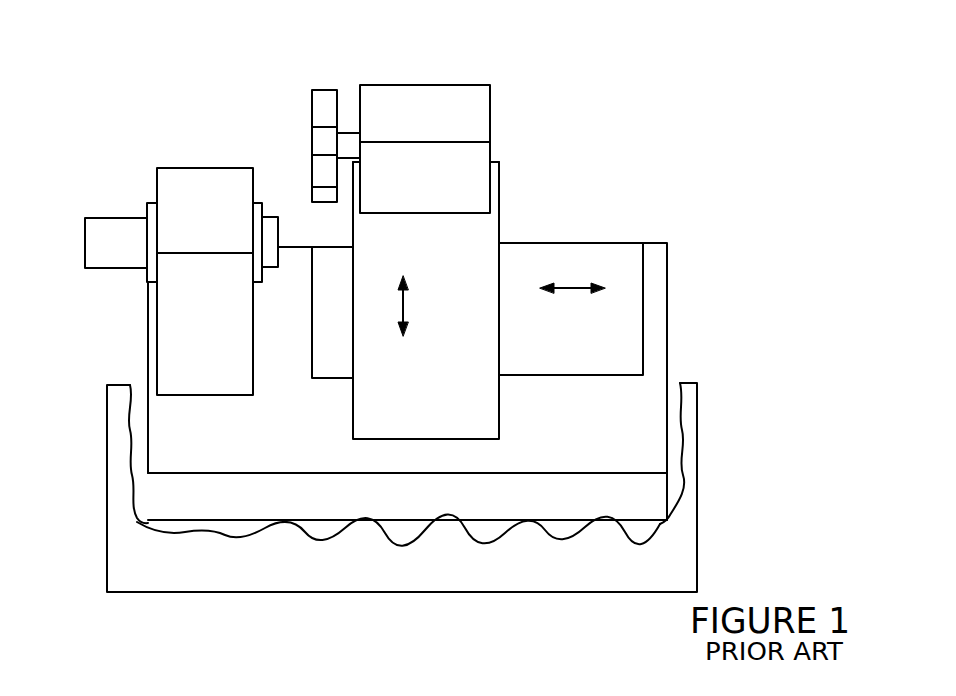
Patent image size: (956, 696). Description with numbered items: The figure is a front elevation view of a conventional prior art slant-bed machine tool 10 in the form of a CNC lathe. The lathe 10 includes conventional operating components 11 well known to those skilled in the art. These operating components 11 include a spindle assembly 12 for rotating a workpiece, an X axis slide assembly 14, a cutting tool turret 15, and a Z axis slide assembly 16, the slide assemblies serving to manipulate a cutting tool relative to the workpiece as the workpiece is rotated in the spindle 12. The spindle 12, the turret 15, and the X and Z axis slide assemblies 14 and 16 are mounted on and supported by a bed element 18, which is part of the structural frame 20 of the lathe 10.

The slant-bed machine tool 10 is at (477, 44).
The operating components 11 is at (128, 125).
The spindle assembly 12 is at (203, 173).
The X axis slide assembly 14 is at (485, 228).
The cutting tool turret 15 is at (318, 100).
The Z axis slide assembly 16 is at (577, 248).
The bed element 18 is at (657, 250).
The structural frame 20 is at (109, 412).